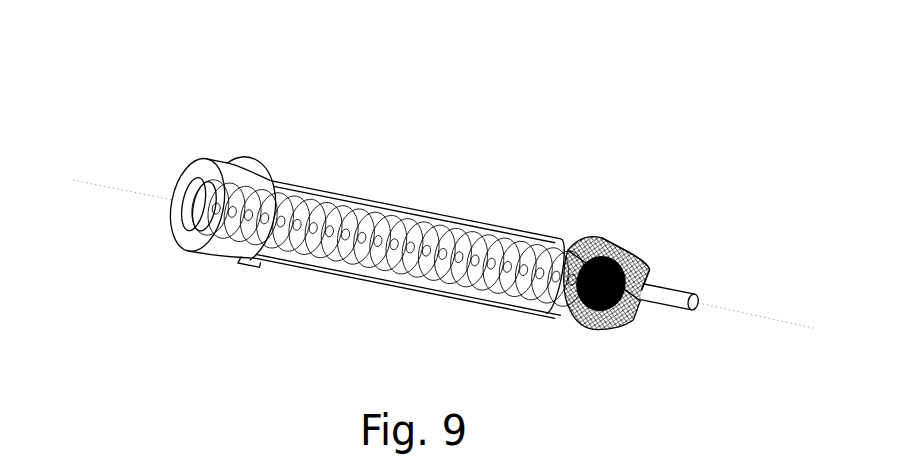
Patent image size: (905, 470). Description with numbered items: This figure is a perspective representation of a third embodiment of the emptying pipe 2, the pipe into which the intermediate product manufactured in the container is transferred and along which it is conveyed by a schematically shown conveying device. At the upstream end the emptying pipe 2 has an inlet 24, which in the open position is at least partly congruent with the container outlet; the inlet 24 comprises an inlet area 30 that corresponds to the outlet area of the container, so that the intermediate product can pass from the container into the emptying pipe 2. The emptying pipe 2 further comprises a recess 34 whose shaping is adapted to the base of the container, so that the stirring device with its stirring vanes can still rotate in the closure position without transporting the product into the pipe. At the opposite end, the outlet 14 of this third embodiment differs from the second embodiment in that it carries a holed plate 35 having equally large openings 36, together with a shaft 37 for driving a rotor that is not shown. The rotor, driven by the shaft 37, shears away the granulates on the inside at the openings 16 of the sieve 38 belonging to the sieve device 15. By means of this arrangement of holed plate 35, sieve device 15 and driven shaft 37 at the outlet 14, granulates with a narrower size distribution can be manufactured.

The emptying pipe 2 is at (88, 22).
The inlet area 30 is at (316, 190).
The inlet 24 is at (375, 186).
The recess 34 is at (284, 284).
The outlet 14 is at (562, 321).
The openings 16 is at (603, 332).
The holed plate 35 is at (584, 250).
The openings 36 is at (622, 250).
The sieve 38 is at (640, 258).
The sieve device 15 is at (656, 264).
The shaft 37 is at (673, 305).